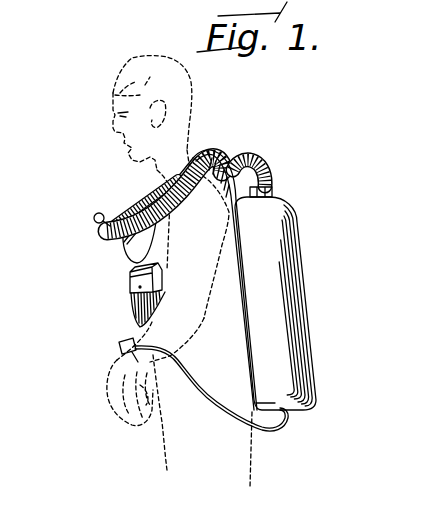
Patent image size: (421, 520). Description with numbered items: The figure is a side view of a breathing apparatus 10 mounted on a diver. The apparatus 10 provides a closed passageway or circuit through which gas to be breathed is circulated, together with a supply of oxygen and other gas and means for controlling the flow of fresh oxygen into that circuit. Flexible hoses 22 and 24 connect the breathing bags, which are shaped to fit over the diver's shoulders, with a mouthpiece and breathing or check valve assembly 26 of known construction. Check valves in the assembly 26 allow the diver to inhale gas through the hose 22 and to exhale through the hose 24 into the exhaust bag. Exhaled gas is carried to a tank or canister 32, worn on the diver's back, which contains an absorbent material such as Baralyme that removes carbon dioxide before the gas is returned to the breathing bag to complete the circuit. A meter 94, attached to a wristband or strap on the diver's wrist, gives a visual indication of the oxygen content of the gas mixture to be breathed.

The apparatus 10 is at (211, 275).
The flexible hose 22 is at (128, 193).
The flexible hose 24 is at (123, 250).
The mouthpiece and breathing or check valve assembly 26 is at (100, 225).
The tank or canister 32 is at (285, 367).
The meter 94 is at (120, 345).